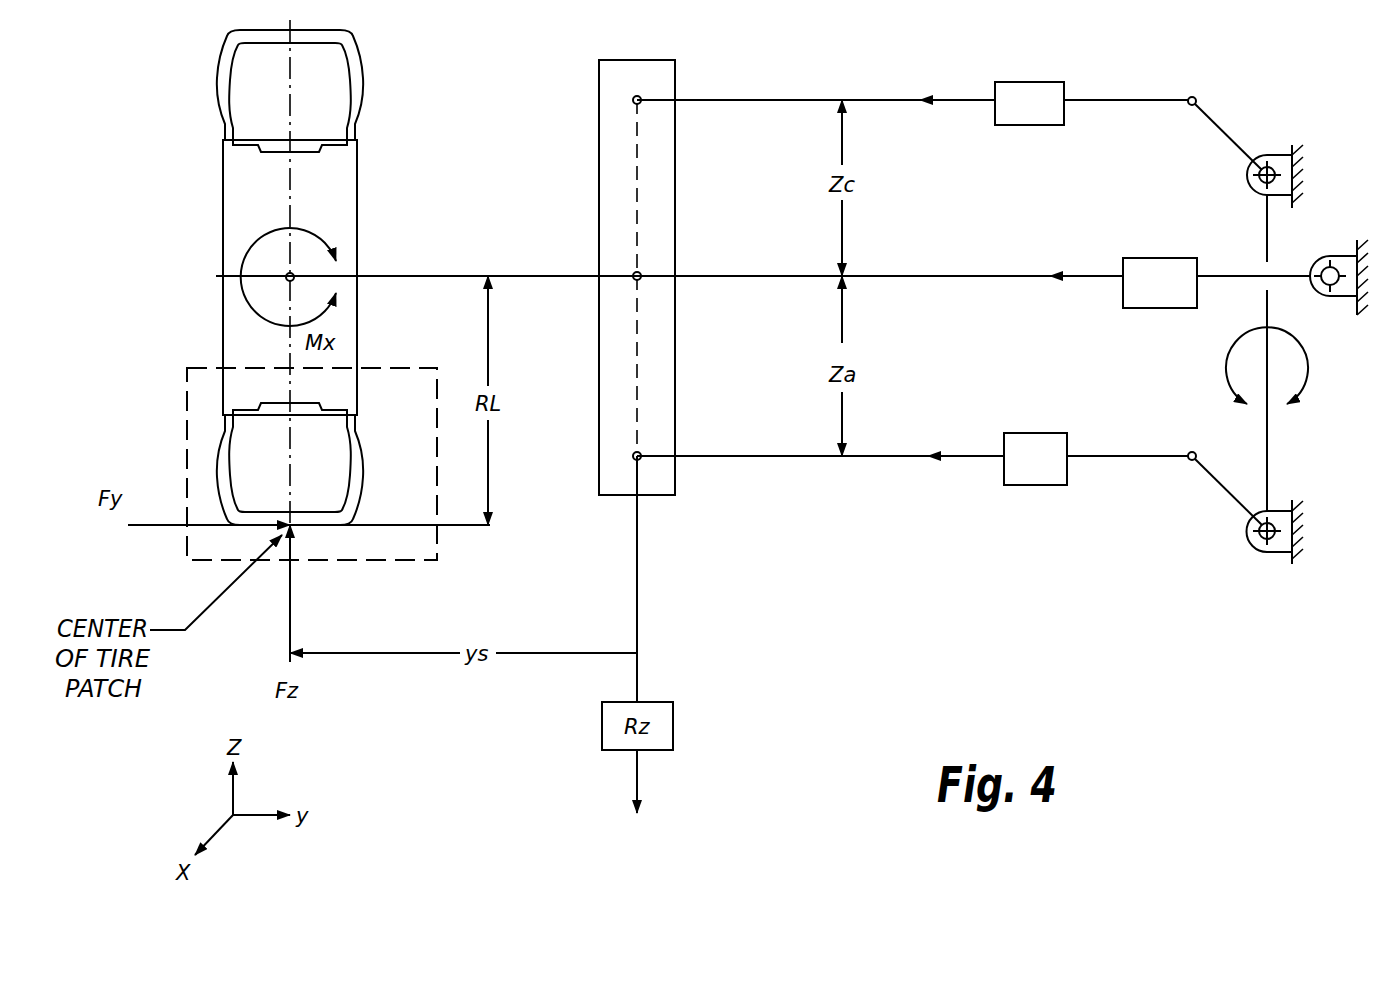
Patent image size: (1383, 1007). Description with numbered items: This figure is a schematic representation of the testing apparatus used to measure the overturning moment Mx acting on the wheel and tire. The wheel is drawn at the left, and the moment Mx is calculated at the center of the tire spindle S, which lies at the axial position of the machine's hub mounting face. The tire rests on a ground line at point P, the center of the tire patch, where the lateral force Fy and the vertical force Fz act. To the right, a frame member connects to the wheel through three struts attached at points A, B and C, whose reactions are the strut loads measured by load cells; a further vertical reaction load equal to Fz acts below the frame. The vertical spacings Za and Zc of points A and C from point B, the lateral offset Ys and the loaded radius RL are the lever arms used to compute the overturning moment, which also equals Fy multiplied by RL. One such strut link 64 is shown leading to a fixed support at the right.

The lateral link 64 is at (905, 281).
The center of the tire spindle S is at (288, 277).
The center of tire patch P is at (309, 593).
The lower link attachment point A is at (622, 467).
The lateral link attachment point B is at (626, 293).
The upper link attachment point C is at (625, 112).